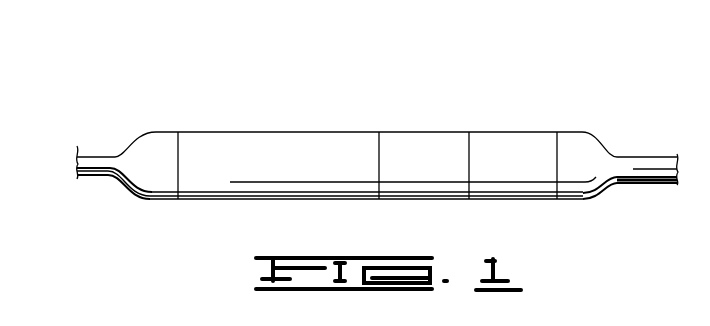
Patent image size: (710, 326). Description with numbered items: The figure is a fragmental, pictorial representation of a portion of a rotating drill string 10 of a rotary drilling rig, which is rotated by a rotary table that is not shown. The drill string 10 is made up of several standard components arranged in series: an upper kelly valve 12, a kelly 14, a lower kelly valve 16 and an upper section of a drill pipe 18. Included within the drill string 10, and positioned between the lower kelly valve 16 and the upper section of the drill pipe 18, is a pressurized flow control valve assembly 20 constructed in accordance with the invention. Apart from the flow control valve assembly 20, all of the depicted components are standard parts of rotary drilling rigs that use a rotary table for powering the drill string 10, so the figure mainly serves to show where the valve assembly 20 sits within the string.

The drill string 10 is at (528, 95).
The upper kelly valve 12 is at (597, 148).
The kelly 14 is at (518, 135).
The lower kelly valve 16 is at (422, 143).
The upper section of a drill pipe 18 is at (155, 131).
The pressurized flow control valve assembly 20 is at (305, 129).